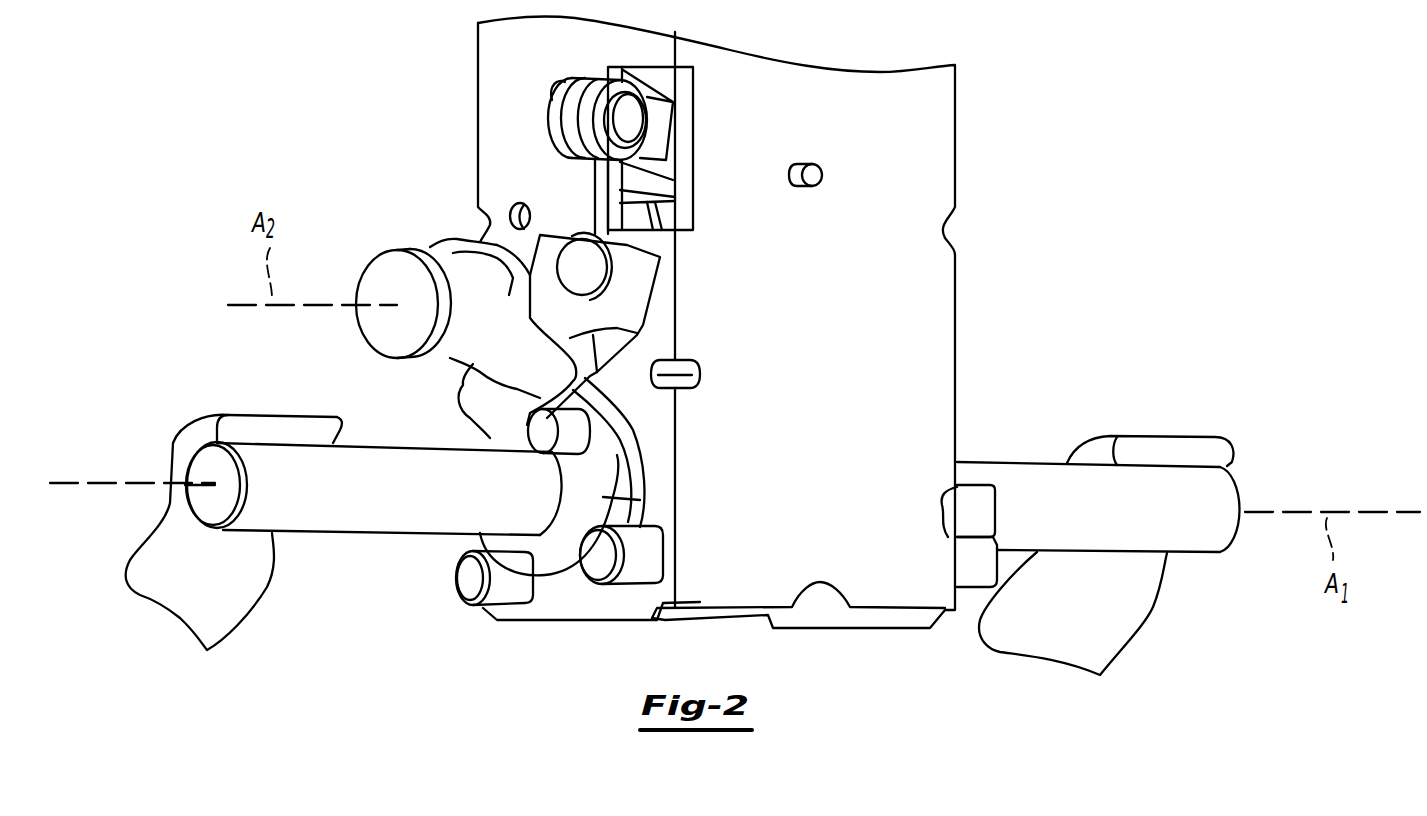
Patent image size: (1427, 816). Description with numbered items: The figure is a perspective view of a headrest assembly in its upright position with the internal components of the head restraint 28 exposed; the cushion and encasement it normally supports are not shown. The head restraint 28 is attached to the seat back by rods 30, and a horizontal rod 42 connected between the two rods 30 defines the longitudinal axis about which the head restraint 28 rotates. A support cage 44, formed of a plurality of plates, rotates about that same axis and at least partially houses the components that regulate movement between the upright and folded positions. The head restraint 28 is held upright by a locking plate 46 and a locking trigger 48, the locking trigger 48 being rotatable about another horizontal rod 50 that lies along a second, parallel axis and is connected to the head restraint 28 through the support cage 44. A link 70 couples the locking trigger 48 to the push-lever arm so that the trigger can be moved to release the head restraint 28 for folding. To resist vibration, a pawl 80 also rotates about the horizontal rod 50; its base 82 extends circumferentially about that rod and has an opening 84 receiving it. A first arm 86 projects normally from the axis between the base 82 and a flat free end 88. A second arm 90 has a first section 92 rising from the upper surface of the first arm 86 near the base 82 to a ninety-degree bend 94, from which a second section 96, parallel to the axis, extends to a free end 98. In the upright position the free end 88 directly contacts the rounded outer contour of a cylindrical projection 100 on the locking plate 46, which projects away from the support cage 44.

The head restraint 28 is at (1049, 119).
The rod 30 is at (210, 600).
The horizontal rod 42 is at (355, 502).
The support cage 44 is at (915, 315).
The locking plate 46 is at (640, 457).
The locking trigger 48 is at (640, 272).
The horizontal rod 50 is at (430, 253).
The link 70 is at (600, 188).
The pawl 80 is at (457, 241).
The base 82 is at (455, 354).
The opening 84 is at (488, 312).
The first arm 86 is at (470, 418).
The free end 88 is at (632, 417).
The second arm 90 is at (517, 302).
The first section 92 is at (532, 280).
The bend 94 is at (540, 238).
The second section 96 is at (593, 230).
The free end 98 is at (573, 230).
The projection 100 is at (540, 431).